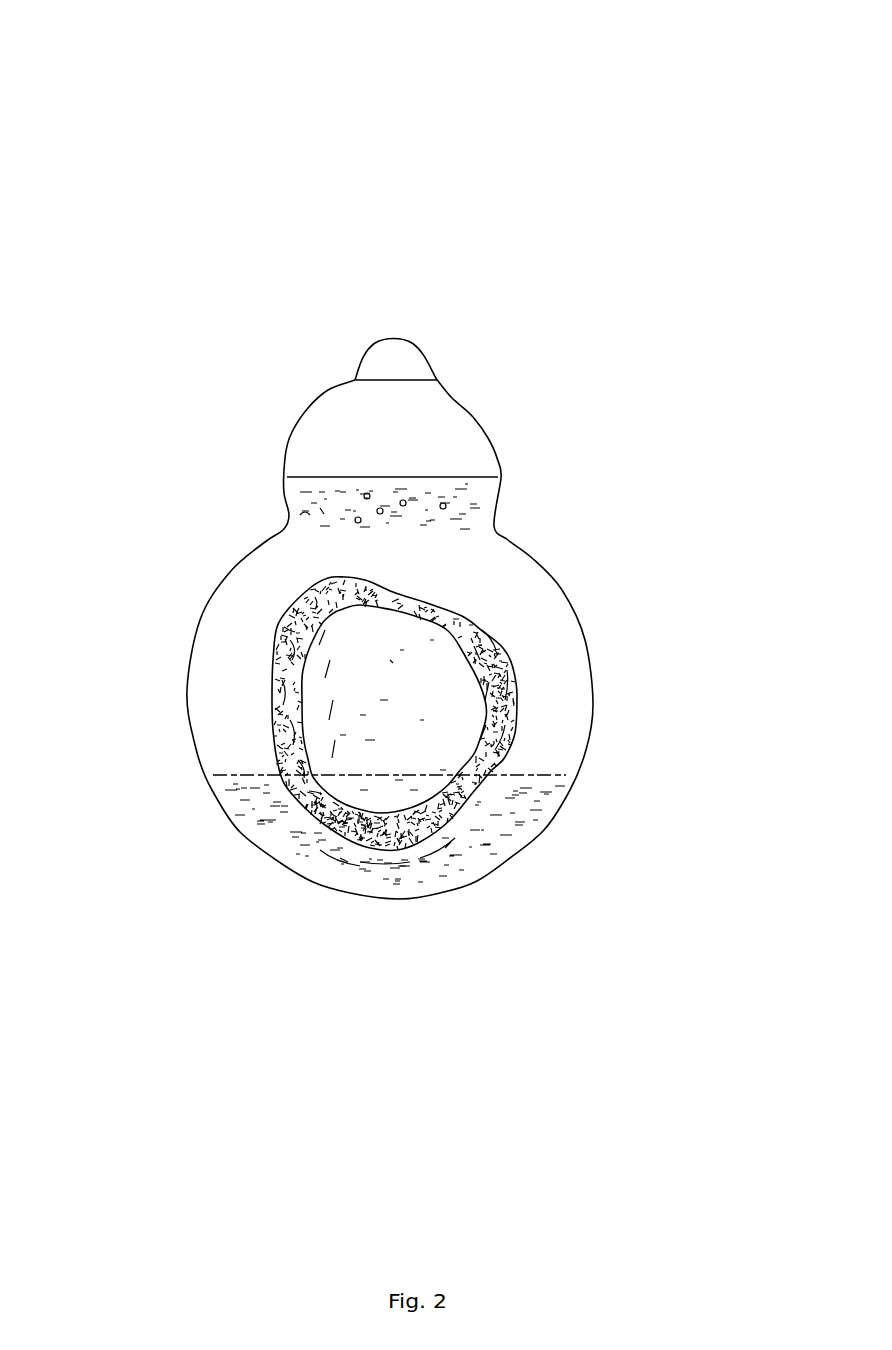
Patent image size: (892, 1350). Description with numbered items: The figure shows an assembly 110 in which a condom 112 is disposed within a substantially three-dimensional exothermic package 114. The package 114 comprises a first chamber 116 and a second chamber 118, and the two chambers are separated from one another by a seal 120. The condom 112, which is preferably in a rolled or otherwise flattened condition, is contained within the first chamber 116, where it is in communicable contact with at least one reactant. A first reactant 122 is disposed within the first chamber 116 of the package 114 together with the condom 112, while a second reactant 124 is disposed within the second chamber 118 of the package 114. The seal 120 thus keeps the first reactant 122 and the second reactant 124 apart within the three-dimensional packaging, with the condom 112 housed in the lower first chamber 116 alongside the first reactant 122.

The assembly 110 is at (197, 182).
The condom 112 is at (519, 692).
The package 114 is at (478, 418).
The first chamber 116 is at (223, 693).
The second chamber 118 is at (353, 412).
The seal 120 is at (384, 532).
The first reactant 122 is at (525, 803).
The second reactant 124 is at (417, 493).